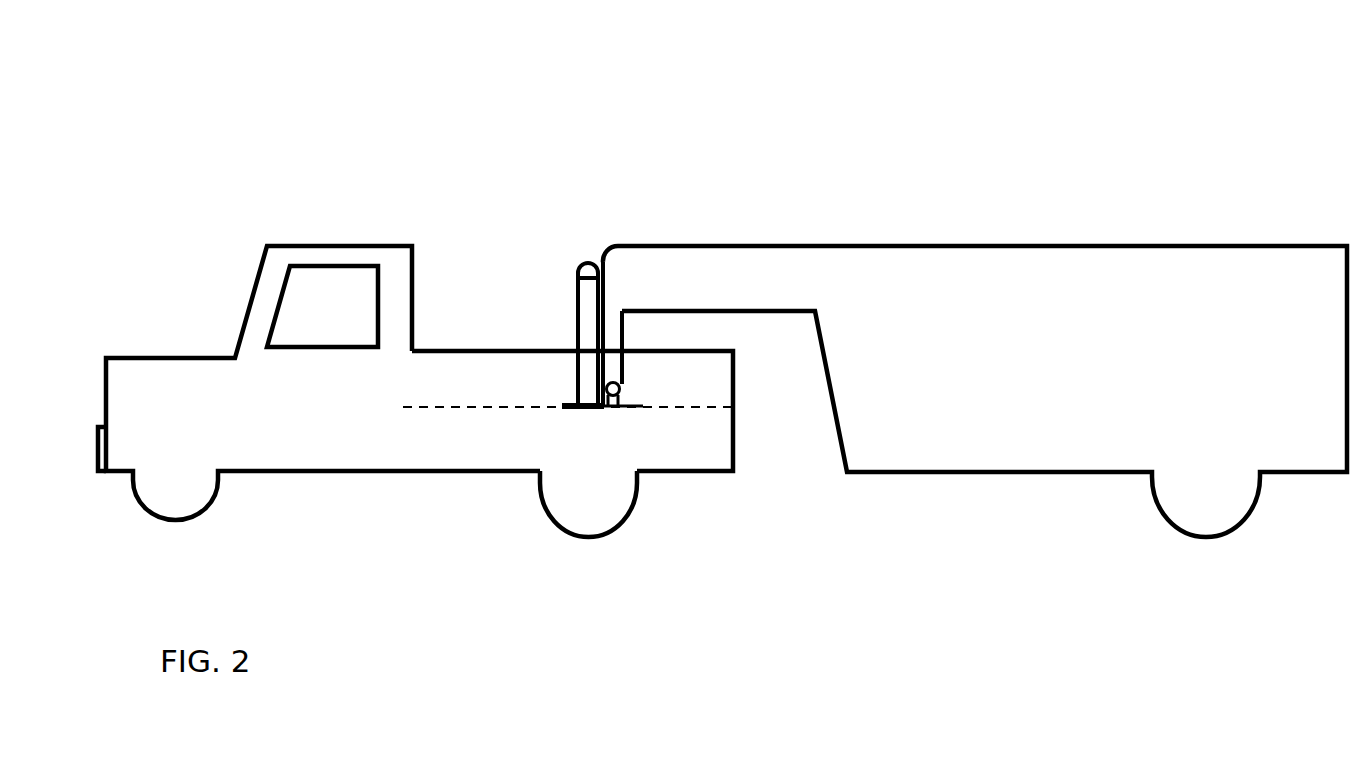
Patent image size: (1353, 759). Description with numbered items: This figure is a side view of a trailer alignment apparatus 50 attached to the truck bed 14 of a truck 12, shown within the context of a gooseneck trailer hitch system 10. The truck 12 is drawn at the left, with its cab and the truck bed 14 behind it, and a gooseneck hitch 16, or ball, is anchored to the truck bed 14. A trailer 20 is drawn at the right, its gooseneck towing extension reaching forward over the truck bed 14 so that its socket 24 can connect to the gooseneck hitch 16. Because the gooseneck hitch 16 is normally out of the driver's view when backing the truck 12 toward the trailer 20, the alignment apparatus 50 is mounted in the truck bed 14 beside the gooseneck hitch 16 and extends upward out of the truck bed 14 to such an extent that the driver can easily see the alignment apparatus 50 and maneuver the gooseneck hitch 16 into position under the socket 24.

The gooseneck trailer hitch system 10 is at (622, 133).
The truck 12 is at (300, 214).
The truck bed 14 is at (445, 407).
The gooseneck hitch 16 is at (634, 375).
The trailer 20 is at (907, 246).
The socket 24 is at (568, 428).
The trailer alignment apparatus 50 is at (568, 300).